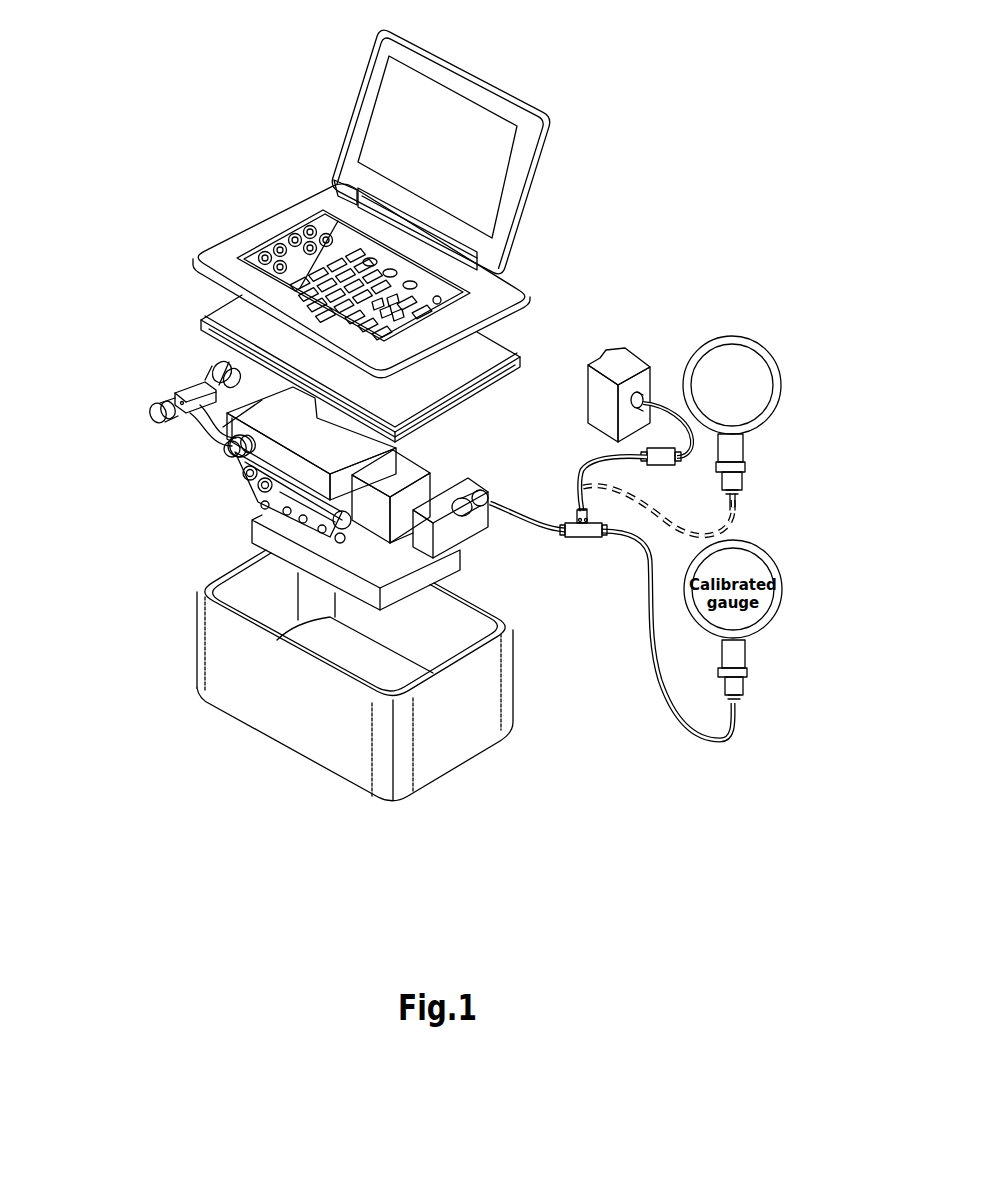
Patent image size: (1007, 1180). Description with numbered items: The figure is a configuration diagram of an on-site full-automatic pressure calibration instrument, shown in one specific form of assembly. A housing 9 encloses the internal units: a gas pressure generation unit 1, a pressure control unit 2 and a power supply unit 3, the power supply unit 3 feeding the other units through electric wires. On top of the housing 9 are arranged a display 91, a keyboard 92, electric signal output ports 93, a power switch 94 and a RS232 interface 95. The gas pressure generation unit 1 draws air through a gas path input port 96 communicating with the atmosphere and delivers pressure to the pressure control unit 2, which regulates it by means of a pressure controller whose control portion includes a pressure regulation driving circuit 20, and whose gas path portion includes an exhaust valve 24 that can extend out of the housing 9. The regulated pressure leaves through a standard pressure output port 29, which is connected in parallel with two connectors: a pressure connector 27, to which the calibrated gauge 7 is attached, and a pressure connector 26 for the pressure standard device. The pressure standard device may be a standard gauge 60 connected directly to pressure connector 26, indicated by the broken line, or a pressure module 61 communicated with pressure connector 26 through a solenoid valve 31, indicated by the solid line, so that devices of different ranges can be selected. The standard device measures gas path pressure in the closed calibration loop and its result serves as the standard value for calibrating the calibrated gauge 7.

The gas pressure generation unit 1 is at (272, 462).
The pressure control unit 2 is at (375, 518).
The power supply unit 3 is at (358, 562).
The calibrated gauge 7 is at (727, 703).
The housing 9 is at (470, 722).
The pressure regulation driving circuit 20 is at (447, 377).
The exhaust valve 24 is at (467, 513).
The pressure connector of pressure standard device 26 is at (580, 511).
The pressure connector of calibrated gauge 27 is at (598, 540).
The standard pressure output port 29 is at (481, 503).
The solenoid valve 31 is at (660, 453).
The standard gauge 60 is at (698, 370).
The pressure module 61 is at (595, 390).
The display 91 is at (471, 143).
The keyboard 92 is at (413, 300).
The electric signal output ports 93 is at (278, 253).
The power switch 94 is at (433, 277).
The RS232 interface 95 is at (190, 393).
The gas path input port 96 is at (229, 450).